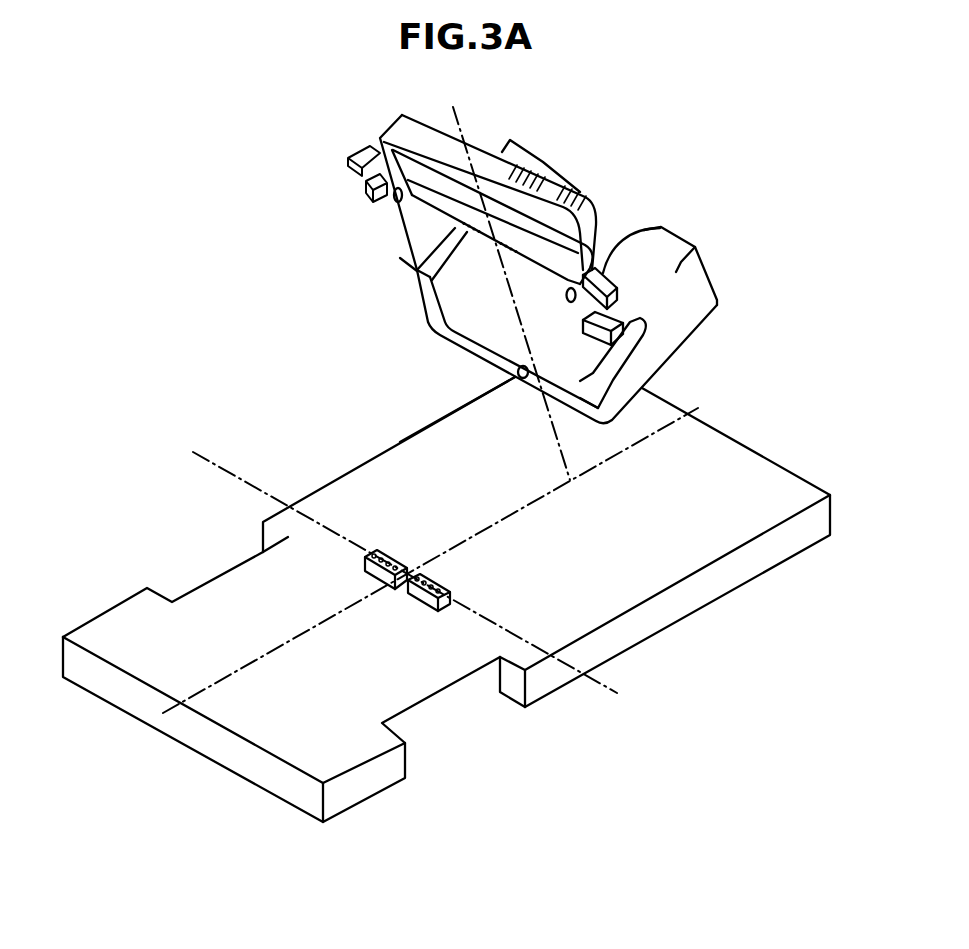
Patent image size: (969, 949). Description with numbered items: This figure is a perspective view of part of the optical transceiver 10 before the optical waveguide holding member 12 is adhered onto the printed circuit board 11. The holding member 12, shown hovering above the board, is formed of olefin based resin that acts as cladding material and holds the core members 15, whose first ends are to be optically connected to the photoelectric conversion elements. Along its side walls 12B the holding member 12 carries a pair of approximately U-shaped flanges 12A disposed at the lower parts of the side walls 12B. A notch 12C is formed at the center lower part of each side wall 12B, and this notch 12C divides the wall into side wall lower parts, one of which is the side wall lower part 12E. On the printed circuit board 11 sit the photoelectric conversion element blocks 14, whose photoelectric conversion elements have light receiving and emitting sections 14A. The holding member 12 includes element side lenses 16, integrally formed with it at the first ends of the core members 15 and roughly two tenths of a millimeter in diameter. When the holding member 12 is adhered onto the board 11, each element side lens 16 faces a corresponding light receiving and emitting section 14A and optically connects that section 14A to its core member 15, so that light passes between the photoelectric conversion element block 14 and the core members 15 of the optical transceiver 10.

The optical transceiver 10 is at (205, 298).
The printed circuit board 11 is at (657, 555).
The optical waveguide holding member 12 is at (591, 284).
The flange 12A is at (603, 252).
The side wall 12B is at (688, 307).
The notch 12C is at (625, 350).
The side wall lower part 12E is at (620, 387).
The photoelectric conversion element block 14 is at (287, 511).
The light receiving and emitting section 14A is at (415, 578).
The core member 15 is at (592, 203).
The element side lens 16 is at (472, 233).